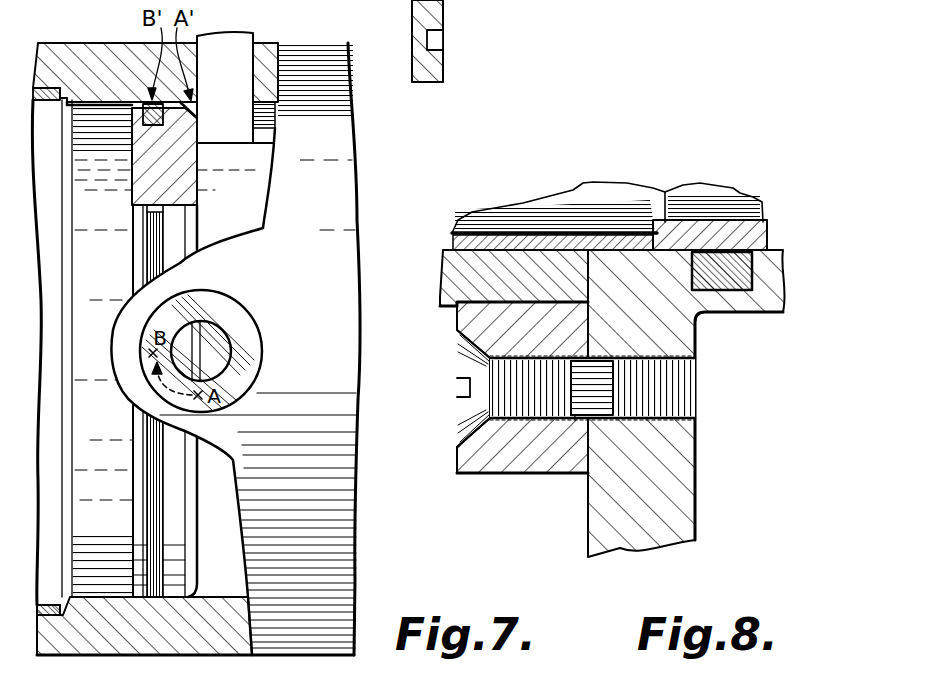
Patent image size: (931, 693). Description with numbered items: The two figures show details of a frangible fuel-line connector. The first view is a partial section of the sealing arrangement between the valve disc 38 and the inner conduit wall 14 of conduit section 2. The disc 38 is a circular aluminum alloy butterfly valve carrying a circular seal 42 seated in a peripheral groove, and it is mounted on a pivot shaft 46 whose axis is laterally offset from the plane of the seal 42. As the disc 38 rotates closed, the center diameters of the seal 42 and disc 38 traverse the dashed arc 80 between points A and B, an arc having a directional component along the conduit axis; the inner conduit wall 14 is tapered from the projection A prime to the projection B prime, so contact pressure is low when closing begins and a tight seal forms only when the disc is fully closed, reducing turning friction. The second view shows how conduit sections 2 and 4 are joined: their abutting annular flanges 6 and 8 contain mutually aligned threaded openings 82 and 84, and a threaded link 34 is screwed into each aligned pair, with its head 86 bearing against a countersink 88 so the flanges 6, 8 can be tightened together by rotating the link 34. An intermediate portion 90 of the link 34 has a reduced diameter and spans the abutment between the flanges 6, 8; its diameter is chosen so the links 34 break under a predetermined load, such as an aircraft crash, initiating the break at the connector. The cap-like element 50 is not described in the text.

In FIG. 7, the inner conduit wall 14 is at (91, 110).
In FIG. 7, the circular seal 42 is at (147, 108).
In FIG. 7, the valve disc 38 is at (190, 222).
In FIG. 7, the shaft 46 is at (250, 337).
In FIG. 7, the arc 80 is at (157, 382).
In FIG. 8, the conduit section 4 is at (436, 277).
In FIG. 8, the cap 50 is at (620, 232).
In FIG. 8, the conduit section 2 is at (787, 297).
In FIG. 8, the countersink 88 is at (458, 338).
In FIG. 8, the head 86 is at (458, 358).
In FIG. 8, the threaded opening 84 is at (458, 426).
In FIG. 8, the threaded link 34 is at (698, 366).
In FIG. 8, the threaded opening 82 is at (698, 400).
In FIG. 8, the annular flange 6 is at (697, 455).
In FIG. 8, the annular flange 8 is at (478, 474).
In FIG. 8, the intermediate portion 90 is at (577, 420).